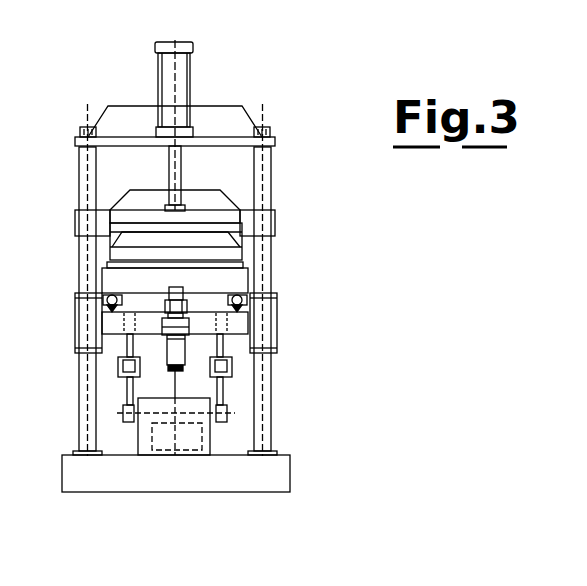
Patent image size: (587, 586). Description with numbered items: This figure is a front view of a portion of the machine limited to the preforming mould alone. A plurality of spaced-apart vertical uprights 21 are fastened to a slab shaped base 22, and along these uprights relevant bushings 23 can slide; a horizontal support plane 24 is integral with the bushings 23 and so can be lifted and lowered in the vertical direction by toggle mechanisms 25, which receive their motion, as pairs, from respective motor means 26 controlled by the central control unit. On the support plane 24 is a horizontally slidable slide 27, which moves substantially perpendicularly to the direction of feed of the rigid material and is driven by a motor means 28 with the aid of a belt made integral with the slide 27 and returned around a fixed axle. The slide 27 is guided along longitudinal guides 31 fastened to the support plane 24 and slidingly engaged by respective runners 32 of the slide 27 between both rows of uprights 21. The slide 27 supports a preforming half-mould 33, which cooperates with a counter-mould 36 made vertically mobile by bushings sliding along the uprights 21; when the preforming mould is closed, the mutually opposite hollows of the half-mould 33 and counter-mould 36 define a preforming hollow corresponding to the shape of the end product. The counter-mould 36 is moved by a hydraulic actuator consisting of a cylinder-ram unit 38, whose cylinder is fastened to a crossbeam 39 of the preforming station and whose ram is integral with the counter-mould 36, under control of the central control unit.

The vertical uprights 21 is at (85, 427).
The slab shaped base 22 is at (283, 478).
The bushings 23 is at (77, 343).
The horizontal support plane 24 is at (113, 335).
The toggle mechanisms 25 is at (233, 370).
The motor means 26 is at (175, 455).
The slide 27 is at (240, 282).
The motor means 28 is at (168, 358).
The longitudinal guides 31 is at (107, 315).
The runners 32 is at (106, 300).
The preforming half-mould 33 is at (233, 262).
The counter-mould 36 is at (132, 215).
The cylinder-ram unit 38 is at (182, 75).
The crossbeam 39 is at (123, 137).